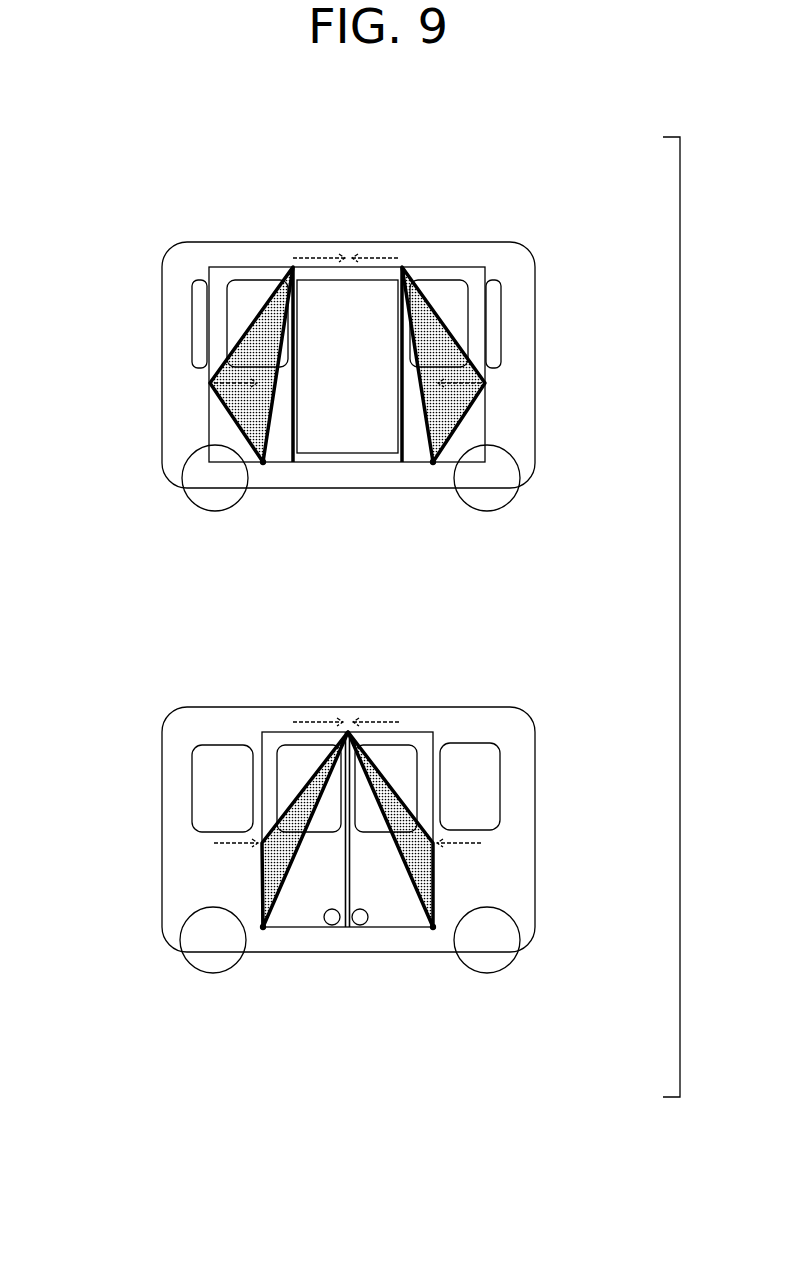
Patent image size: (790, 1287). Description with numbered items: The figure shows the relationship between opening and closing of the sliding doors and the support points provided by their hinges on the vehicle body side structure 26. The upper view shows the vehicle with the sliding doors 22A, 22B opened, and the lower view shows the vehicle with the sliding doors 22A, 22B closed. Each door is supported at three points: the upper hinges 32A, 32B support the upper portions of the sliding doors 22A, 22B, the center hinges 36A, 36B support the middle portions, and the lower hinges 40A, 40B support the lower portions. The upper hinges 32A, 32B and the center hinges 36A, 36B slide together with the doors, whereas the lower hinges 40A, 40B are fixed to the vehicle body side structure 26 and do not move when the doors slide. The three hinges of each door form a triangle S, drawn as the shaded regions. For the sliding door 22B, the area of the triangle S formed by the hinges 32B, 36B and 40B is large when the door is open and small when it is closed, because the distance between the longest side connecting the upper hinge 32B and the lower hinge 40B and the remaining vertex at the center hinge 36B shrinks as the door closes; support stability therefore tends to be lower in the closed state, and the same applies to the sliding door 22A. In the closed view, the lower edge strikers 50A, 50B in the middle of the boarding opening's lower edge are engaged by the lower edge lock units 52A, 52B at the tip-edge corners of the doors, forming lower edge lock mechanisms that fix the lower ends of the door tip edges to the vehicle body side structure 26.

The vehicle body side structure 26 is at (312, 242).
The sliding door 22A is at (218, 275).
The sliding door 22B is at (470, 275).
The upper hinge 32A is at (292, 266).
The upper hinge 32B is at (403, 266).
The triangle S is at (443, 334).
The center hinge 36A is at (210, 383).
The center hinge 36B is at (485, 383).
The lower hinge 40A is at (263, 462).
The lower hinge 40B is at (433, 462).
The lower edge striker 50A is at (282, 1001).
The lower edge lock unit 52A is at (332, 925).
The lower edge striker 50B is at (417, 1001).
The lower edge lock unit 52B is at (360, 925).